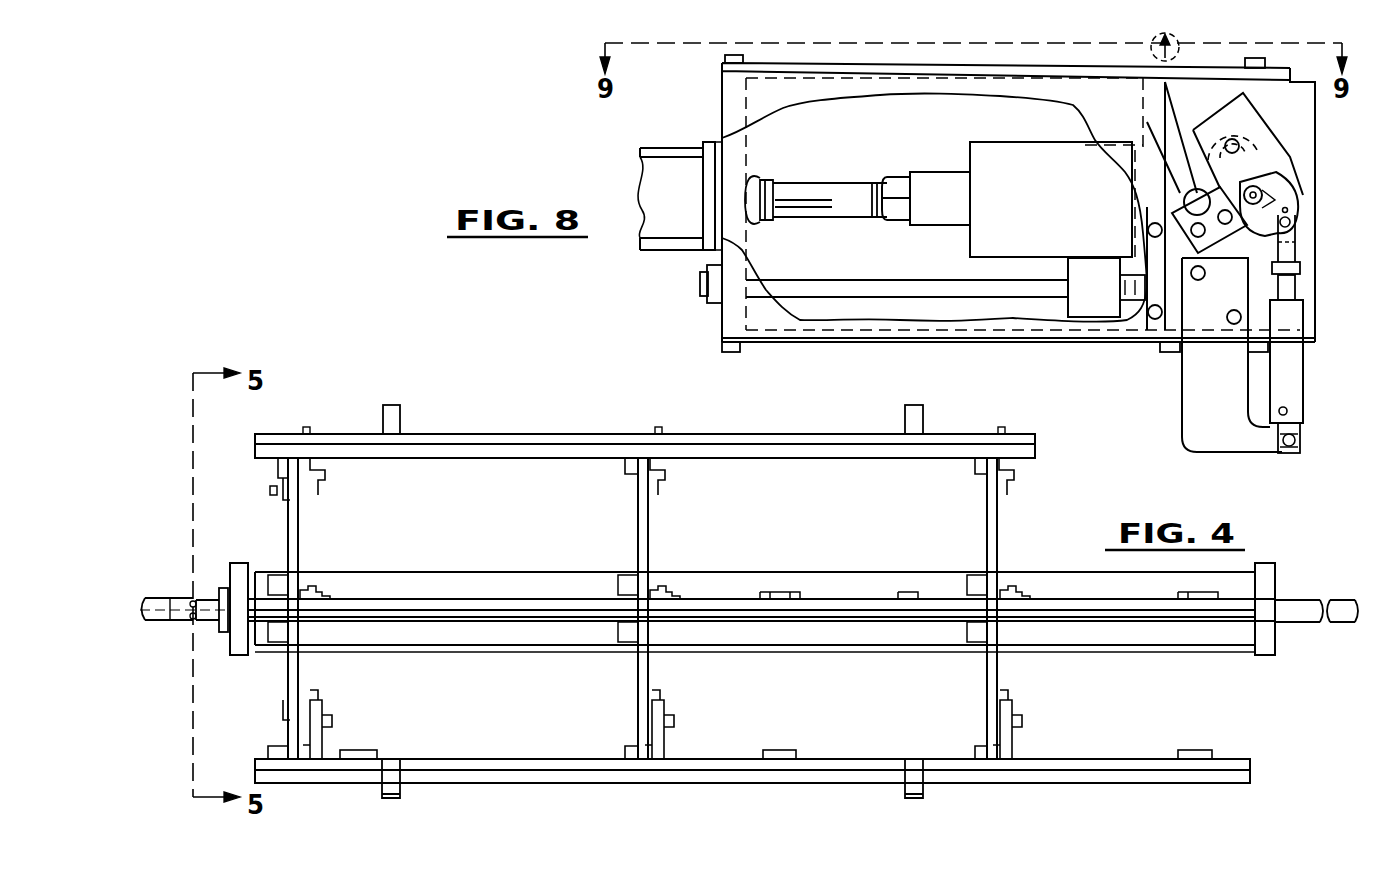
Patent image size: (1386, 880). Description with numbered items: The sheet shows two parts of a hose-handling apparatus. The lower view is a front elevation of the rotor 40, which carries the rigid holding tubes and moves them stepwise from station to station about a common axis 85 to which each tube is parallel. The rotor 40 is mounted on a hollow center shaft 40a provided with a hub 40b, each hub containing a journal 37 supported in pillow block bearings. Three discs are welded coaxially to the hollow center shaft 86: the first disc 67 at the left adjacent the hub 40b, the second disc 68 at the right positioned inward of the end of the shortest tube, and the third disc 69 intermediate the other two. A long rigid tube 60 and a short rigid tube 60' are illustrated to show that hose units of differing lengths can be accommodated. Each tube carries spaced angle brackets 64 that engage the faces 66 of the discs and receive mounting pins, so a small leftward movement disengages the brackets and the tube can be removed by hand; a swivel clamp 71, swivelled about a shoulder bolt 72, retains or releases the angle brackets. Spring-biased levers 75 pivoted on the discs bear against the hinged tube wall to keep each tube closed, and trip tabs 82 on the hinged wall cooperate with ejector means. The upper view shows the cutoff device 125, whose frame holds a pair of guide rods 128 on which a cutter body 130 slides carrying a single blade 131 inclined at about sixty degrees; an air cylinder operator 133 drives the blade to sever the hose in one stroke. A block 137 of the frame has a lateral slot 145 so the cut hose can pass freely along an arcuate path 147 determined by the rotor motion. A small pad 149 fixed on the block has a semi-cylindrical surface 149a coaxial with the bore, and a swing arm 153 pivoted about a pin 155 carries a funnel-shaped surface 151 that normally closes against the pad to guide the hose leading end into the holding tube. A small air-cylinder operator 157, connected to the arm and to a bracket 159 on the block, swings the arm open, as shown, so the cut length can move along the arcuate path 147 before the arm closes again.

In FIG. 8, the cutoff device 125 is at (690, 300).
In FIG. 8, the guide rods 128 is at (877, 286).
In FIG. 8, the cutter body 130 is at (1055, 211).
In FIG. 8, the blade 131 is at (1250, 170).
In FIG. 8, the air cylinder operator 133 is at (670, 222).
In FIG. 8, the block 137 is at (1316, 300).
In FIG. 8, the slot 145 is at (1162, 141).
In FIG. 8, the arcuate path 147 is at (1172, 87).
In FIG. 8, the pad 149 is at (1226, 232).
In FIG. 8, the semi-cylindrical surface 149a is at (1182, 204).
In FIG. 8, the funnel-shaped surface 151 is at (1240, 149).
In FIG. 8, the swing arm 153 is at (1245, 108).
In FIG. 8, the pin 155 is at (1264, 205).
In FIG. 8, the air-cylinder operator 157 is at (1292, 377).
In FIG. 8, the bracket 159 is at (1200, 373).
In FIG. 4, the journal 37 is at (164, 621).
In FIG. 4, the rotor 40 is at (1032, 520).
In FIG. 4, the hollow center shaft 40a is at (502, 572).
In FIG. 4, the hub 40b is at (246, 648).
In FIG. 4, the rigid tube 60 is at (752, 742).
In FIG. 4, the short rigid tube 60' is at (645, 419).
In FIG. 4, the angle brackets 64 is at (283, 463).
In FIG. 4, the faces 66 is at (288, 518).
In FIG. 4, the first disc 67 is at (299, 512).
In FIG. 4, the second disc 68 is at (987, 543).
In FIG. 4, the third disc 69 is at (638, 543).
In FIG. 4, the swivel clamp 71 is at (283, 501).
In FIG. 4, the shoulder bolt 72 is at (270, 491).
In FIG. 4, the spring-biased levers 75 is at (320, 711).
In FIG. 4, the trip tabs 82 is at (394, 770).
In FIG. 4, the common axis 85 is at (180, 600).
In FIG. 4, the hollow center shaft 86 is at (767, 578).